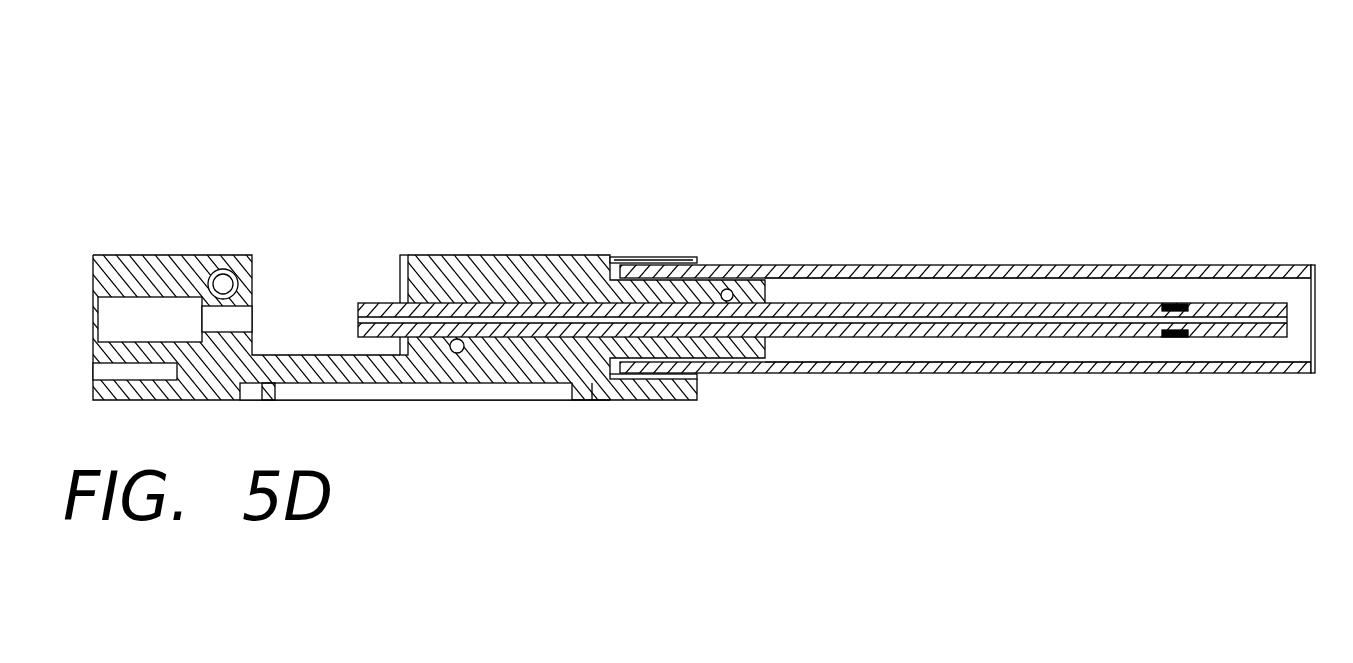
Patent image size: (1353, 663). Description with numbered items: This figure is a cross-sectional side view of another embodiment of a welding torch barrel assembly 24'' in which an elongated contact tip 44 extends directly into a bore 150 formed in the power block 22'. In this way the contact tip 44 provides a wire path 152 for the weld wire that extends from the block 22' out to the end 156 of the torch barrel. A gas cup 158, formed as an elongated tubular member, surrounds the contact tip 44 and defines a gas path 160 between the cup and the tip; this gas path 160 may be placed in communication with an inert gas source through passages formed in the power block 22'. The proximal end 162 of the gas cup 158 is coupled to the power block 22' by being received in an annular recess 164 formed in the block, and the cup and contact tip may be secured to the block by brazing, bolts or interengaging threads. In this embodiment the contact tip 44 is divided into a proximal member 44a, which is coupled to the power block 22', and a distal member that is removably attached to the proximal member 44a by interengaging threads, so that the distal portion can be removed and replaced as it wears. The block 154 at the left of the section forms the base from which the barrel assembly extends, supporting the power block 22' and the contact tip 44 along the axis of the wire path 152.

The base block 154 is at (287, 266).
The power block 22' is at (582, 279).
The torch barrel assembly 24'' is at (846, 73).
The proximal end of gas cup 162 is at (662, 257).
The annular recess 164 is at (617, 400).
The gas cup 158 is at (1057, 265).
The end of torch barrel 156 is at (1261, 232).
The gas path 160 is at (996, 290).
The bore 150 is at (522, 337).
The proximal member of contact tip 44a is at (805, 305).
The wire path 152 is at (868, 318).
The contact tip 44 is at (1249, 342).